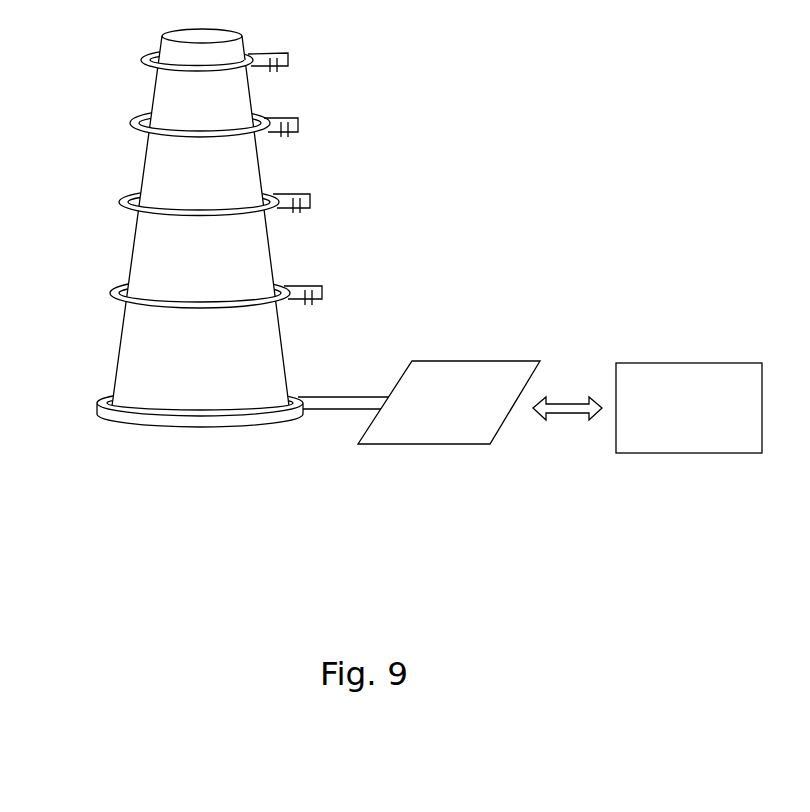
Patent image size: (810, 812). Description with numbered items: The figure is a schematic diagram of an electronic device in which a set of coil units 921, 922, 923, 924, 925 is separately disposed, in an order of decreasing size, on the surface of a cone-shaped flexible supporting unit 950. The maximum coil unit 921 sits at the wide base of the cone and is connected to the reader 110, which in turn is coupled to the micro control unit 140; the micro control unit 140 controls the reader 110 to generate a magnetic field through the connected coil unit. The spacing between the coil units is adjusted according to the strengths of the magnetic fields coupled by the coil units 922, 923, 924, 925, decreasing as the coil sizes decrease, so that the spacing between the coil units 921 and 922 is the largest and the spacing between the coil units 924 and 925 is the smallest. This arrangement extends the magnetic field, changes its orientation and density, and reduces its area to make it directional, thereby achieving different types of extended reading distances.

The flexible supporting unit 950 is at (188, 428).
The coil unit 925 is at (140, 57).
The coil unit 924 is at (130, 122).
The coil unit 923 is at (118, 200).
The coil unit 922 is at (108, 291).
The coil unit 921 is at (97, 402).
The reader 110 is at (422, 445).
The micro control unit 140 is at (687, 454).